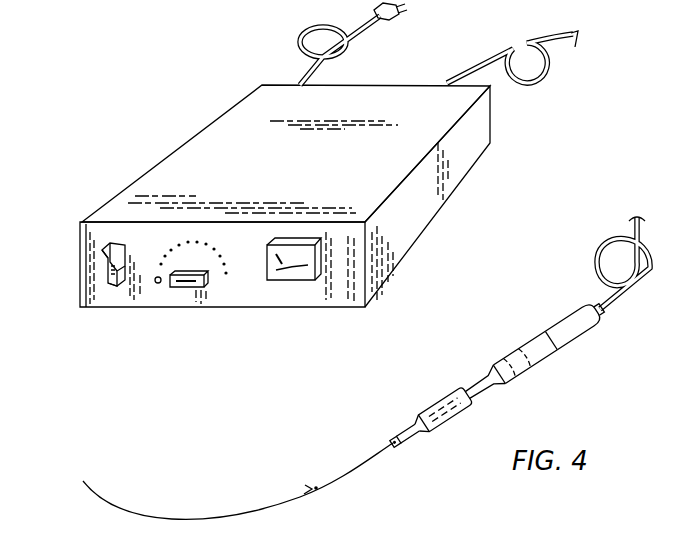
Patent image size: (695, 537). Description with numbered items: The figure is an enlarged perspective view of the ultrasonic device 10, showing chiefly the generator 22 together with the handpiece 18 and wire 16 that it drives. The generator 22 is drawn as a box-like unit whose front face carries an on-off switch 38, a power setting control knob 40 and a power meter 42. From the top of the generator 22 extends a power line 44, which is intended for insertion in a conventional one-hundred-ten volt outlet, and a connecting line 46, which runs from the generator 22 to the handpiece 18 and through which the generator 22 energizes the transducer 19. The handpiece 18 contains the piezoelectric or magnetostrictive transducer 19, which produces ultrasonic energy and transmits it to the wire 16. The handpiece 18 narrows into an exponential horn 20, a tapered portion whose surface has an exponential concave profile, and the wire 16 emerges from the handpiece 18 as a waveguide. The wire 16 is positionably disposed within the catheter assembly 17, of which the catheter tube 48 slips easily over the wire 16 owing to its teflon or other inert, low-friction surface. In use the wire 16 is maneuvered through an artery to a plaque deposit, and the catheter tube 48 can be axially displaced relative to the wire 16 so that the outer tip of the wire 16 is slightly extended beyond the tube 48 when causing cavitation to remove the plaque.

The ultrasonic device 10 is at (118, 160).
The wire 16 is at (348, 470).
The catheter assembly 17 is at (425, 416).
The handpiece 18 is at (563, 325).
The transducer 19 is at (525, 345).
The exponential horn 20 is at (482, 378).
The generator 22 is at (182, 145).
The on-off switch 38 is at (108, 275).
The power setting control knob 40 is at (188, 288).
The power meter 42 is at (292, 282).
The power line 44 is at (300, 44).
The connecting line 46 is at (558, 44).
The catheter tube 48 is at (402, 453).